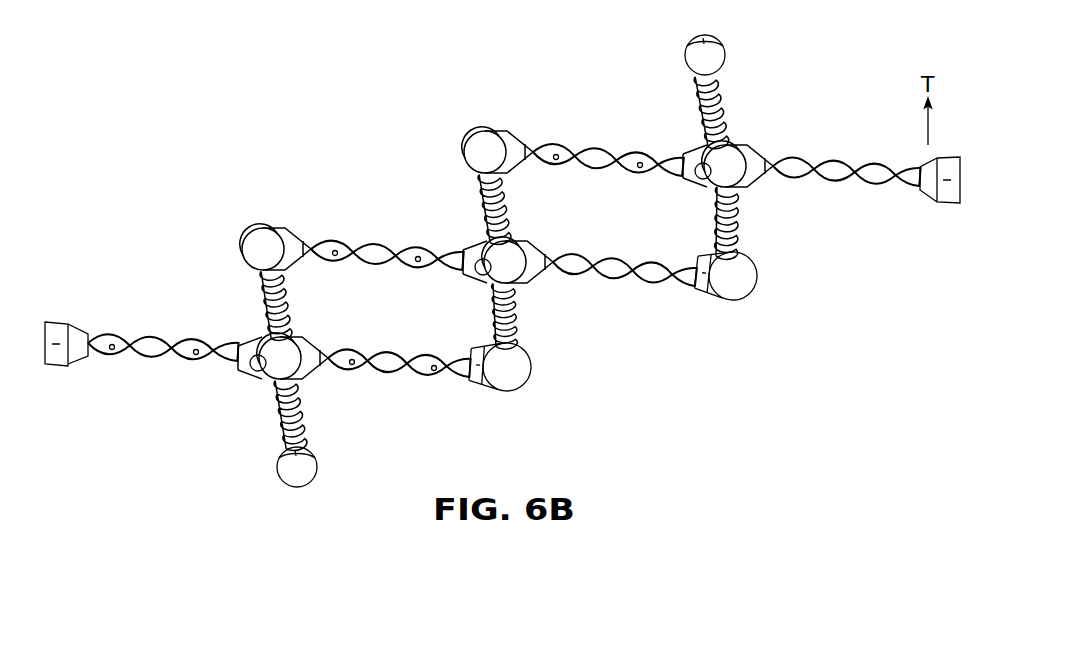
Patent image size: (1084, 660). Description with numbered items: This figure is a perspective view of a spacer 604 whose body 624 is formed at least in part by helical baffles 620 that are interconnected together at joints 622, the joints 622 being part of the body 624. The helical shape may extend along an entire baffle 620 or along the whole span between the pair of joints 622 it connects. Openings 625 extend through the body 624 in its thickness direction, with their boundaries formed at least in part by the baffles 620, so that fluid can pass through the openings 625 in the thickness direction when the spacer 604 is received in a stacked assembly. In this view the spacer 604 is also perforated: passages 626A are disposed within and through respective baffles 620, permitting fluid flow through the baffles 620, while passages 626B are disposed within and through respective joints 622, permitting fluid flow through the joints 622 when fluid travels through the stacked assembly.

The spacer 604 is at (864, 52).
The baffles 620 is at (555, 145).
The joints 622 is at (730, 137).
The body 624 is at (226, 424).
The openings 625 is at (603, 180).
The passages 626A is at (345, 253).
The passages 626B is at (697, 178).